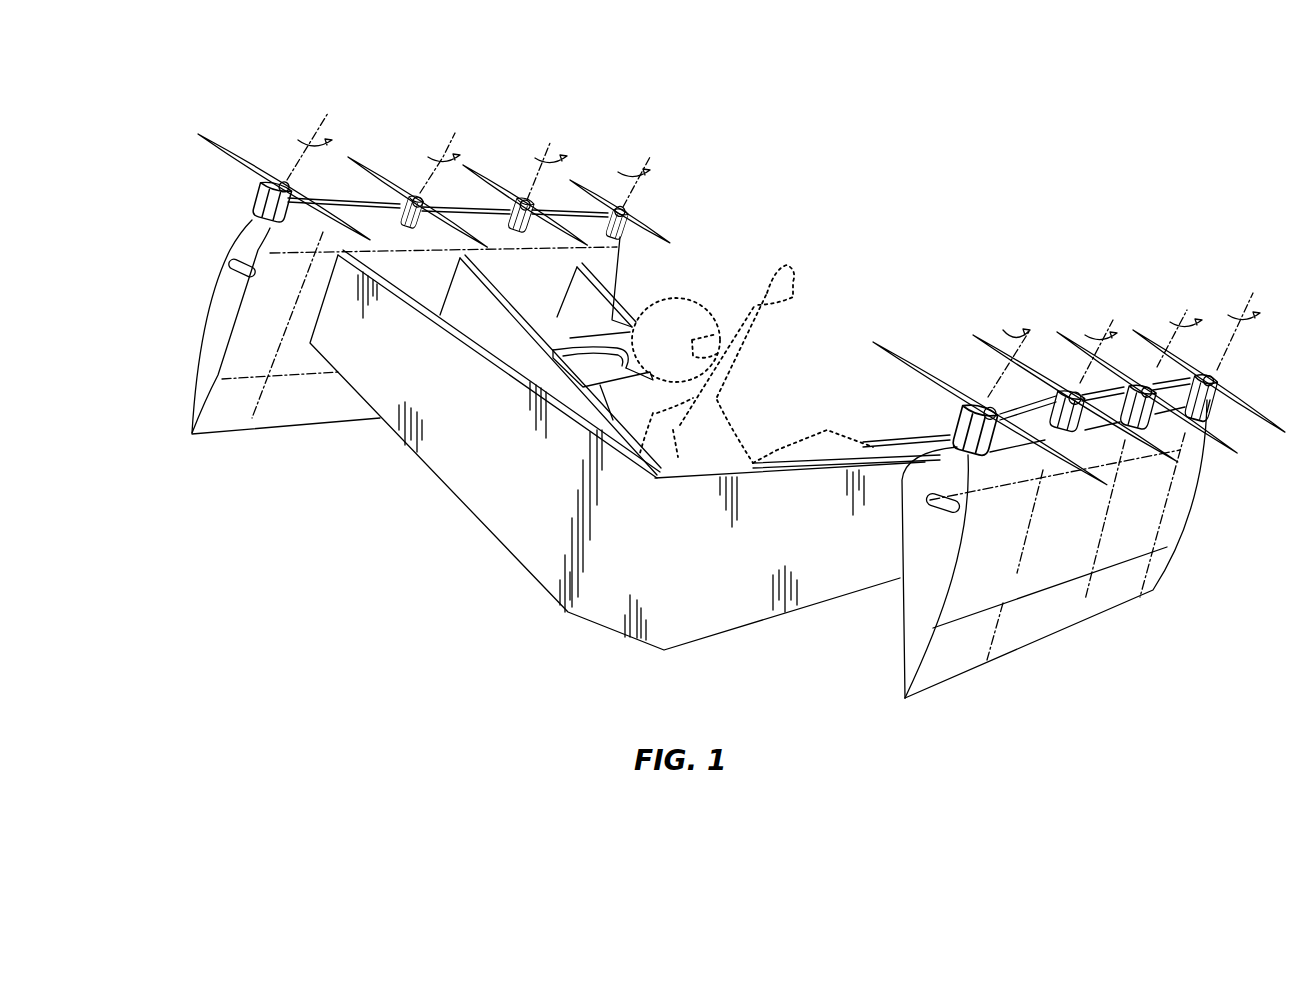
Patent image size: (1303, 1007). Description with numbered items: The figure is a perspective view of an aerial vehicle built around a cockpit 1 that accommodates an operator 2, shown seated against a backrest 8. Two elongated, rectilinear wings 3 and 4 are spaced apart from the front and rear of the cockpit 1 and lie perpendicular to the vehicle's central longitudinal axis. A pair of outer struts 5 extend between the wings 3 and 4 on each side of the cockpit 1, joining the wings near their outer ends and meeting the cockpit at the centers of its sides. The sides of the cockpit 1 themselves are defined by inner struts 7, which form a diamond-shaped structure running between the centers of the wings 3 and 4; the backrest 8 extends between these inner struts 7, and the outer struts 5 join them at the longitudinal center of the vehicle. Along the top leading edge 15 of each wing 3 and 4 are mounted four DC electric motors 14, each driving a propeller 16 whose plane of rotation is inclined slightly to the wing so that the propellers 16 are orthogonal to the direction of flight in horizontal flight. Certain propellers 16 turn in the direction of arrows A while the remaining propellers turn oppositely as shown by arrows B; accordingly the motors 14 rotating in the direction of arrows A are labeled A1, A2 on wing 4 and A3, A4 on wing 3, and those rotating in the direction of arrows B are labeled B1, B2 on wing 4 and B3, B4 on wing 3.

The cockpit 1 is at (809, 335).
The operator 2 is at (682, 298).
The wing 3 is at (1057, 545).
The wing 4 is at (282, 434).
The outer strut 5 is at (582, 320).
The inner strut 7 is at (523, 321).
The backrest 8 is at (618, 341).
The DC electric motor 14 is at (255, 200).
The leading edge 15 is at (510, 200).
The propeller 16 is at (225, 150).
The arrows A is at (447, 152).
The arrows B is at (640, 165).
The motor A1 is at (287, 218).
The motor A2 is at (400, 198).
The motor A3 is at (1120, 392).
The motor A4 is at (1188, 380).
The motor B1 is at (515, 214).
The motor B2 is at (605, 208).
The motor B3 is at (960, 422).
The motor B4 is at (1050, 403).